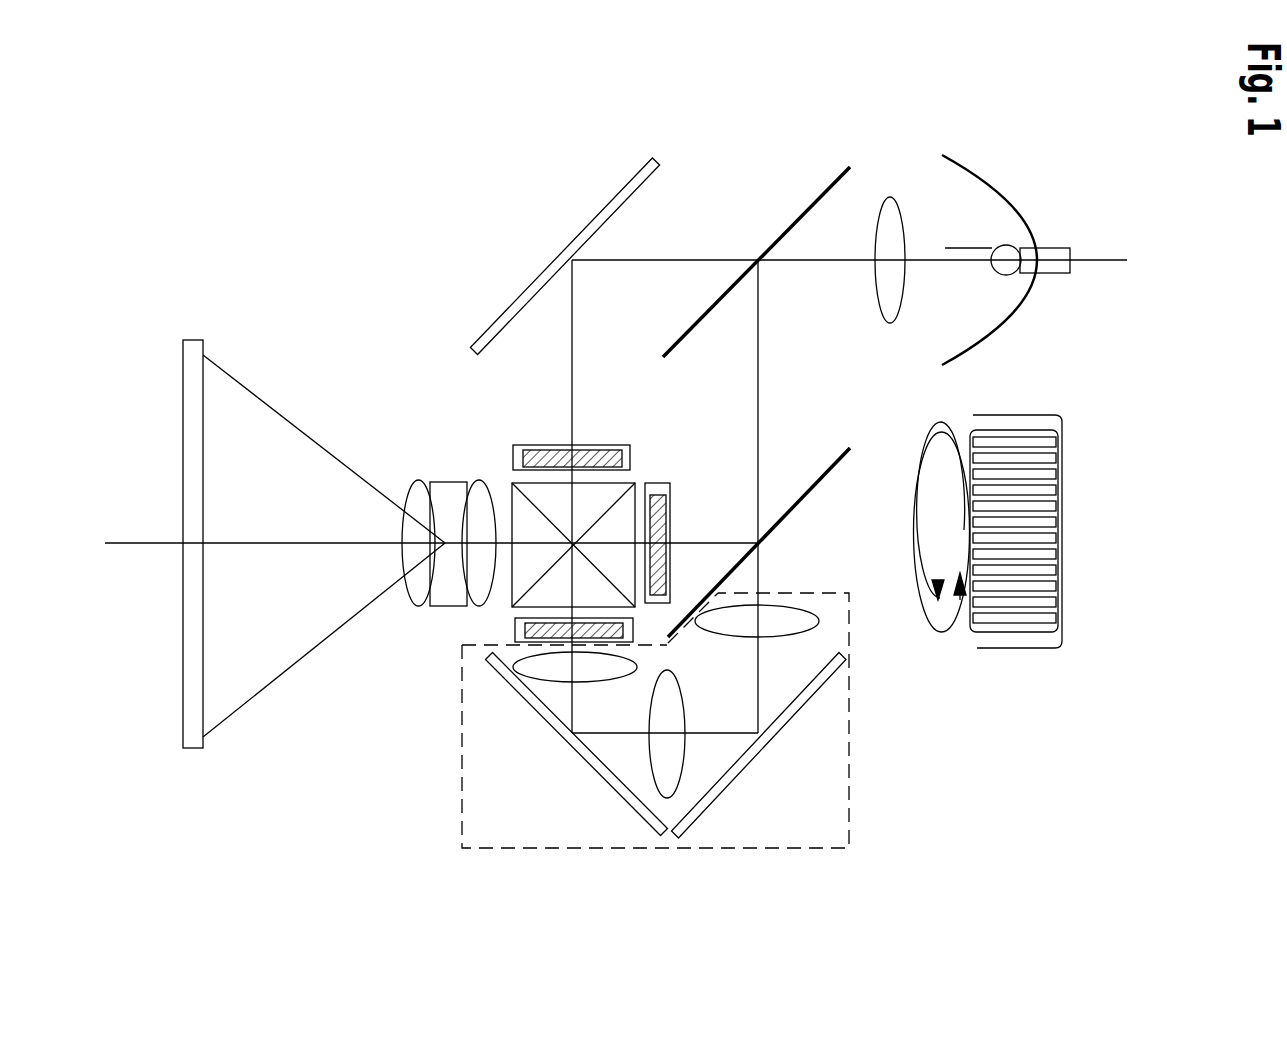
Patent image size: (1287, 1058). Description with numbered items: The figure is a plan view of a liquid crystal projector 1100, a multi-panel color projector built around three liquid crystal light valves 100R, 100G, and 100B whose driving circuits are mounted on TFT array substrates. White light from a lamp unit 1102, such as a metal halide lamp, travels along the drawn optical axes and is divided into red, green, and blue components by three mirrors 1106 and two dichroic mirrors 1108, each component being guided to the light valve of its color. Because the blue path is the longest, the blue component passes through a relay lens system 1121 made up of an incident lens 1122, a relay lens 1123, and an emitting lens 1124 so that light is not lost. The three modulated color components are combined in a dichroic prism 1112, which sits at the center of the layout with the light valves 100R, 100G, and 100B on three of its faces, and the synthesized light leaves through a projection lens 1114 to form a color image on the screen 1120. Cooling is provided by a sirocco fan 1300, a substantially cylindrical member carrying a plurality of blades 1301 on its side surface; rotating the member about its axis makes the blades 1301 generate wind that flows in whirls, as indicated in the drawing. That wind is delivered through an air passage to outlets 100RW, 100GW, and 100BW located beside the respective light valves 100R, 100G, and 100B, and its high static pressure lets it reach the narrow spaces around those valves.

The liquid crystal projector 1100 is at (913, 118).
The lamp unit 1102 is at (1032, 298).
The mirror 1106 is at (646, 174).
The dichroic mirror 1108 is at (787, 226).
The dichroic prism 1112 is at (525, 527).
The projection lens 1114 is at (402, 482).
The screen 1120 is at (203, 625).
The relay lens system 1121 is at (835, 848).
The incident lens 1122 is at (817, 625).
The relay lens 1123 is at (683, 775).
The emitting lens 1124 is at (515, 665).
The R light valve 100R is at (623, 459).
The G light valve 100G is at (653, 483).
The B light valve 100B is at (525, 630).
The outlet 100RW is at (590, 446).
The outlet 100GW is at (672, 537).
The outlet 100BW is at (515, 623).
The sirocco fan 1300 is at (1062, 480).
The blade 1301 is at (1018, 605).